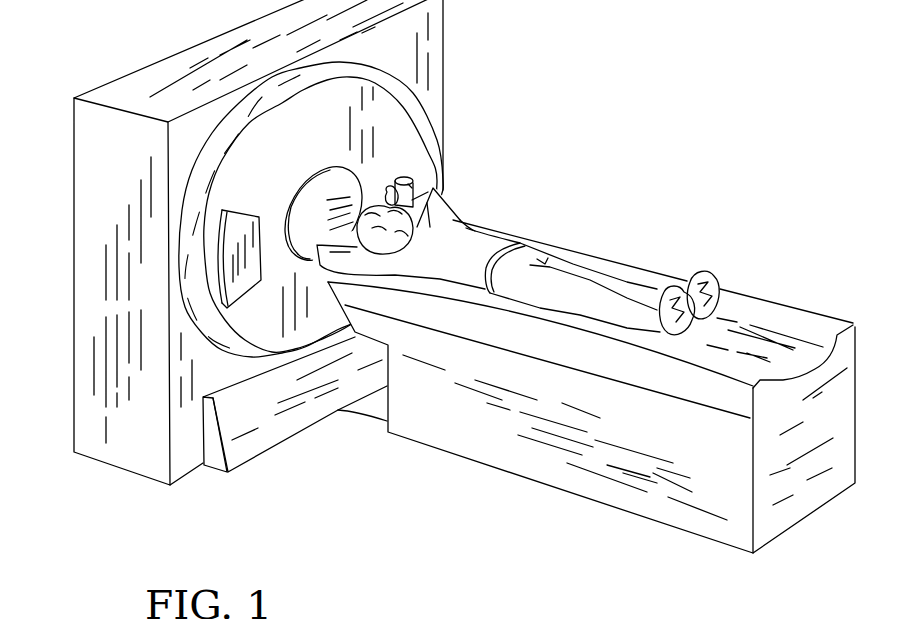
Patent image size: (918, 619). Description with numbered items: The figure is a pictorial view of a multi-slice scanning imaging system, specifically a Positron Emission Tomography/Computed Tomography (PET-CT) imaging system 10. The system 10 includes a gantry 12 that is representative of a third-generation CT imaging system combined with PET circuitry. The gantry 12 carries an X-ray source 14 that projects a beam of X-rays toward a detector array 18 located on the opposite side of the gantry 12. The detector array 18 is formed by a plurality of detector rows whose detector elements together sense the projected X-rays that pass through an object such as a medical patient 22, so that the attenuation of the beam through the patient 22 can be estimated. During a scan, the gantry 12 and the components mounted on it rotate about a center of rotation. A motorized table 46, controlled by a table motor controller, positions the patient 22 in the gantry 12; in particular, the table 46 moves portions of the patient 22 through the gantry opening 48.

The PET-CT imaging system 10 is at (355, 440).
The gantry 12 is at (257, 97).
The X-ray source 14 is at (412, 186).
The detector array 18 is at (240, 290).
The patient 22 is at (467, 222).
The motorized table 46 is at (480, 438).
The gantry opening 48 is at (360, 184).